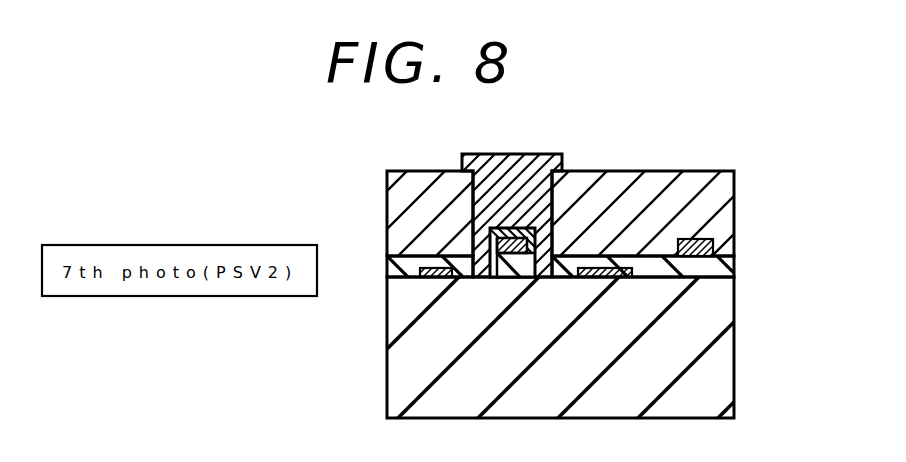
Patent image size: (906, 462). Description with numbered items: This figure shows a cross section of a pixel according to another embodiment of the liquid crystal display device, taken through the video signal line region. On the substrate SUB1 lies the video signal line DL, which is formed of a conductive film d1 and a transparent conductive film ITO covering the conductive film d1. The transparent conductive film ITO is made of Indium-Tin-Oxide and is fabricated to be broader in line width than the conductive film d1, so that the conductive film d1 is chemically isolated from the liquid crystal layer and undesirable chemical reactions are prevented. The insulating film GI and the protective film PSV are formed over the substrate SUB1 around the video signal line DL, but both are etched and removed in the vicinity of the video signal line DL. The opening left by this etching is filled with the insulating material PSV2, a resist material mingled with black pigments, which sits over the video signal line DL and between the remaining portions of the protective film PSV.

The insulating material PSV2 is at (507, 154).
The protective film PSV is at (730, 224).
The insulating film GI is at (718, 268).
The substrate SUB1 is at (728, 343).
The video signal line DL is at (560, 291).
The conductive film d1 is at (505, 250).
The transparent conductive film ITO is at (496, 253).